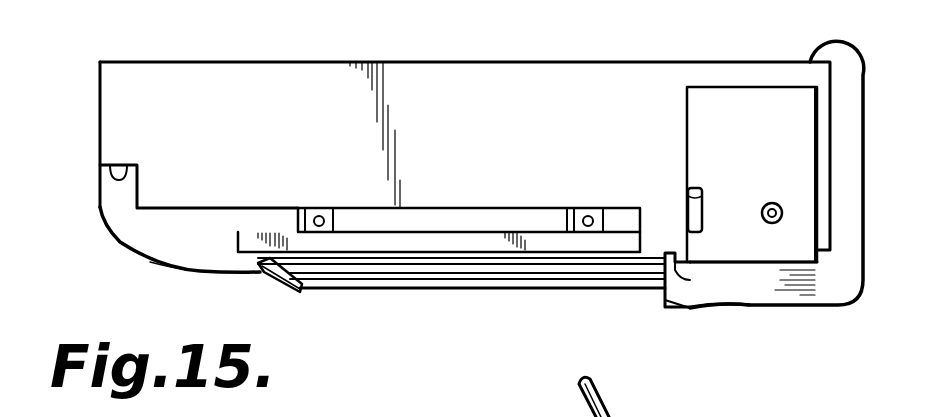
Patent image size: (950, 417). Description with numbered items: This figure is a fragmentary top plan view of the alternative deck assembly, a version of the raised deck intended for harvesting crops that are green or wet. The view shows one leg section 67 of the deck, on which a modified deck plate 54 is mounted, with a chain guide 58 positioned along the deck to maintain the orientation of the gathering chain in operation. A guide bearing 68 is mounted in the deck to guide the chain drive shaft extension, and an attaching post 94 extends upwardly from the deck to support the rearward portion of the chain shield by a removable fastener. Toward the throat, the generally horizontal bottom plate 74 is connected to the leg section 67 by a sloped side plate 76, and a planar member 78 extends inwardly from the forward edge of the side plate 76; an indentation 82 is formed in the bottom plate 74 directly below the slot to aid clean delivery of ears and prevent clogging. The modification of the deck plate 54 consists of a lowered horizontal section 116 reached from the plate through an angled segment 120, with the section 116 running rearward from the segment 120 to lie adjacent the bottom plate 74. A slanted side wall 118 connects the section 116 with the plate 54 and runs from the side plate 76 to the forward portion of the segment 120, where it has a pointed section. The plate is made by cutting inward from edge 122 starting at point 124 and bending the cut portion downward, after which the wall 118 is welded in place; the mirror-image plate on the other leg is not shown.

The leg section 67 is at (500, 70).
The chain guide 58 is at (450, 238).
The deck plate 54 is at (138, 258).
The edge 122 is at (182, 273).
The point 124 is at (260, 270).
The angled segment 120 is at (322, 289).
The lowered horizontal section 116 is at (490, 287).
The slanted side wall 118 is at (573, 272).
The attaching post 94 is at (702, 212).
The guide bearing 68 is at (772, 203).
The planar member 78 is at (676, 273).
The indentation 82 is at (688, 313).
The bottom plate 74 is at (797, 290).
The sloped side plate 76 is at (633, 397).